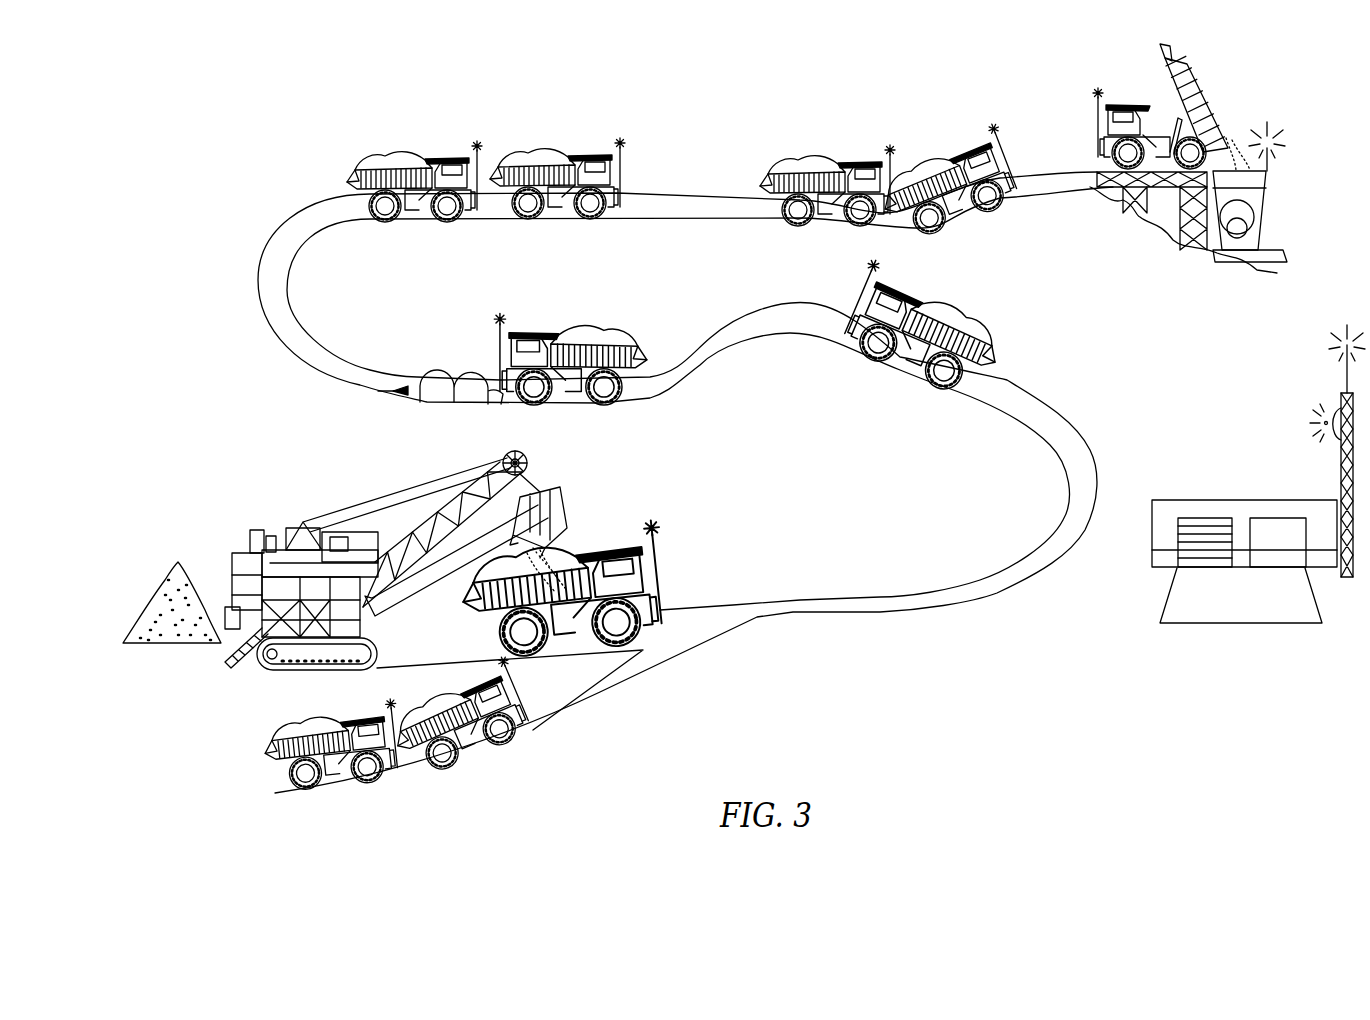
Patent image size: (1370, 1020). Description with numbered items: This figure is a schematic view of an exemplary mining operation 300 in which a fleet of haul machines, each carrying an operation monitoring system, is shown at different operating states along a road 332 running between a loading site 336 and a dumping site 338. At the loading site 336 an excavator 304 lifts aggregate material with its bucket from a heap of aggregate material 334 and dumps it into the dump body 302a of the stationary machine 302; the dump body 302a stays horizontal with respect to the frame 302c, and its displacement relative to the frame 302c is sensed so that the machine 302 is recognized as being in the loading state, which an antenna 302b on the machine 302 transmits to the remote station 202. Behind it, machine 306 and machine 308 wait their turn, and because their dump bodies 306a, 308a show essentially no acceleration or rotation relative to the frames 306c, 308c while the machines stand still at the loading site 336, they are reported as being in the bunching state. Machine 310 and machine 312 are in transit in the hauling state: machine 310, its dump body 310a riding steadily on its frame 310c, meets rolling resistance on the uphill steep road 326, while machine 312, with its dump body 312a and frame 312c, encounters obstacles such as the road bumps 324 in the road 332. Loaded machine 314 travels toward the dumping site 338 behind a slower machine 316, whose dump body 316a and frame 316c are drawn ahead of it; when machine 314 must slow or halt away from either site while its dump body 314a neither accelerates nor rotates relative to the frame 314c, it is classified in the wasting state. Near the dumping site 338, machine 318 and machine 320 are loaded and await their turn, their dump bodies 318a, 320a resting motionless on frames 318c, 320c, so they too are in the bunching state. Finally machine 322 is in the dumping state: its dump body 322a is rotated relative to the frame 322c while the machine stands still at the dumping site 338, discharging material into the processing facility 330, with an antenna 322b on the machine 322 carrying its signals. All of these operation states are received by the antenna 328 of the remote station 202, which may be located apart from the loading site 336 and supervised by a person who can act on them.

The mining operation 300 is at (266, 121).
The remote station 202 is at (1205, 482).
The machine 302 is at (595, 573).
The dump body 302a is at (520, 590).
The antenna 302b is at (660, 570).
The frame 302c is at (588, 590).
The excavator 304 is at (348, 522).
The machine 306 is at (459, 723).
The dump body 306a is at (428, 738).
The frame 306c is at (472, 768).
The machine 308 is at (327, 761).
The dump body 308a is at (300, 745).
The frame 308c is at (348, 792).
The machine 310 is at (941, 326).
The dump body 310a is at (998, 340).
The frame 310c is at (905, 378).
The machine 312 is at (590, 366).
The truck bed 312a is at (640, 342).
The truck chassis 312c is at (590, 406).
The machine 314 is at (408, 182).
The dump body 314a is at (378, 164).
The frame 314c is at (410, 226).
The machine 316 is at (557, 181).
The truck bed 316a is at (523, 165).
The truck chassis 316c is at (545, 225).
The machine 318 is at (827, 193).
The dump body 318a is at (795, 175).
The frame 318c is at (816, 232).
The machine 320 is at (947, 183).
The dump body 320a is at (928, 188).
The frame 320c is at (975, 225).
The machine 322 is at (1134, 152).
The dump body 322a is at (1200, 105).
The communication device 322b is at (1092, 125).
The frame 322c is at (1140, 192).
The road bumps 324 is at (385, 396).
The steep road 326 is at (1060, 425).
The antenna 328 is at (1340, 462).
The processing facility 330 is at (1268, 203).
The road 332 is at (278, 293).
The heap of aggregate material 334 is at (180, 562).
The loading site 336 is at (235, 490).
The dumping site 338 is at (1254, 110).